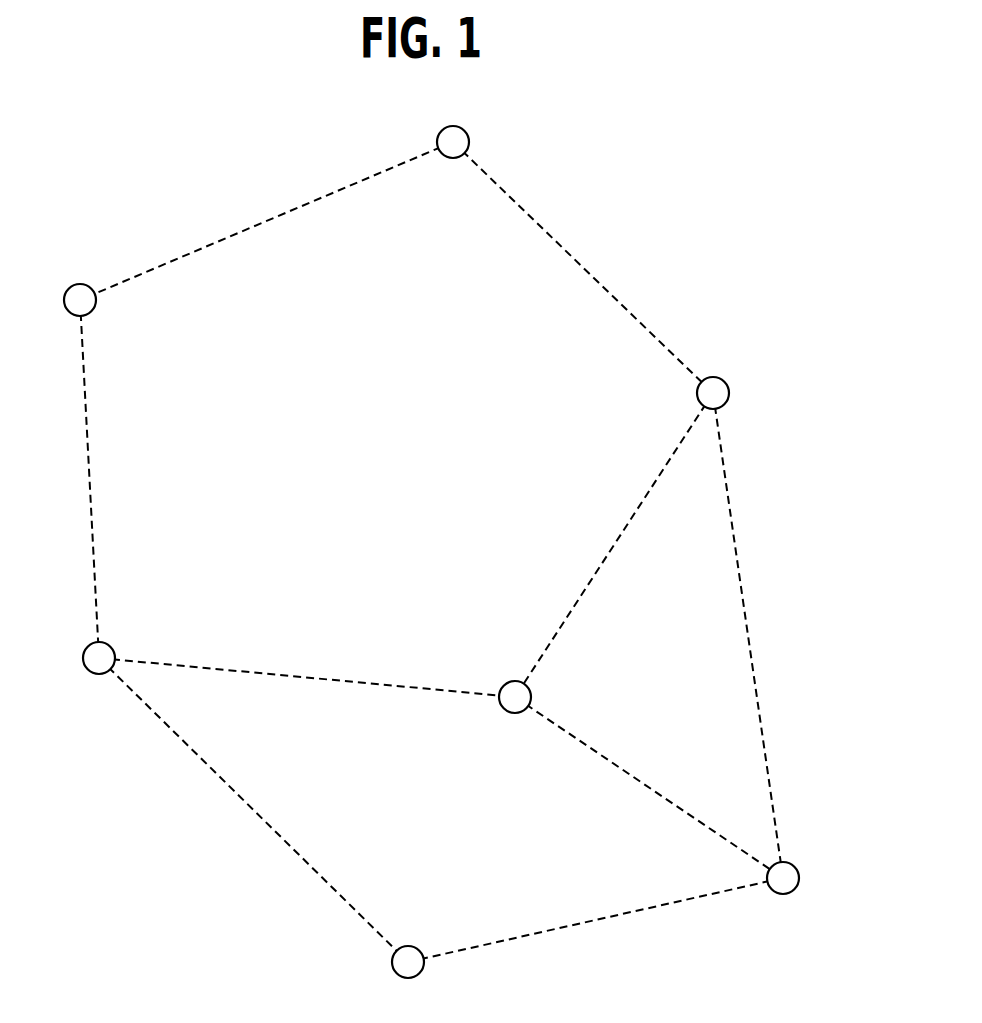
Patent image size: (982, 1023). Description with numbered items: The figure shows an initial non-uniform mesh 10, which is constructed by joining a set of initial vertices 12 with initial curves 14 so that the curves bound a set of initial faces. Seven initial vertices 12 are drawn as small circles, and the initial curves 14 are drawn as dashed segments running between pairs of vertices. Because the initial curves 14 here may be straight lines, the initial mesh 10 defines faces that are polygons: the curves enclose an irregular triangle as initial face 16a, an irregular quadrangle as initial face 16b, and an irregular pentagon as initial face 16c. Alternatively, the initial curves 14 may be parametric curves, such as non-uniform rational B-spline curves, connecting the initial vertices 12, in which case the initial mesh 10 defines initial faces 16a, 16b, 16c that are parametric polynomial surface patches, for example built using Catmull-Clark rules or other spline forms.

The initial mesh 10 is at (623, 136).
The initial vertex 12 is at (457, 126).
The initial curve 14 is at (252, 222).
The initial face 16a is at (683, 657).
The initial face 16b is at (441, 803).
The initial face 16c is at (385, 386).